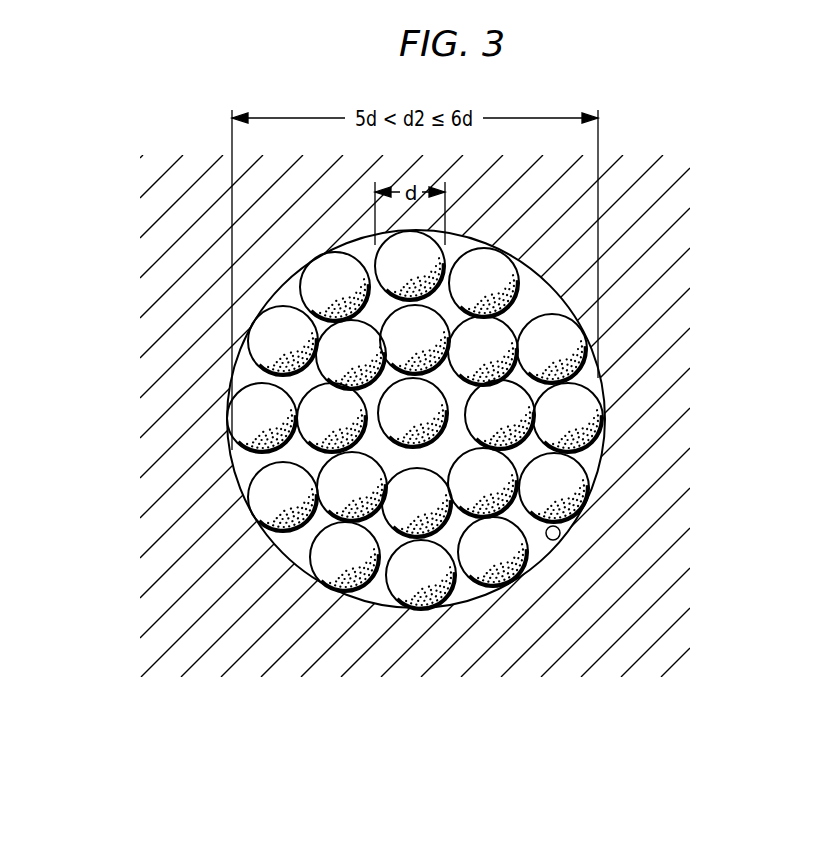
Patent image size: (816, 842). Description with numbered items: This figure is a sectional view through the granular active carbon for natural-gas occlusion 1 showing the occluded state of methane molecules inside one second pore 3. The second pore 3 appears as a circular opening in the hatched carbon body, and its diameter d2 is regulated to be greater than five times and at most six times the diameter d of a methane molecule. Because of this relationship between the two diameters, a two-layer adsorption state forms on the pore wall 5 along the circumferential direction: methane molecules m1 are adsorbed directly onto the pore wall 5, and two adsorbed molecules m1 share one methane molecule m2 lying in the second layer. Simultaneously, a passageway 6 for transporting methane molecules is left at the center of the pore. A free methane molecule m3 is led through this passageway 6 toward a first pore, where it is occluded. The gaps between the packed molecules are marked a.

The granular active carbon for natural-gas occlusion 1 is at (670, 317).
The second pore 3 is at (245, 463).
The pore wall 5 is at (560, 540).
The passageway 6 is at (455, 433).
The interstitial gap a is at (250, 508).
The methane molecule m1 is at (268, 535).
The methane molecule m2 is at (315, 562).
The free methane molecule m3 is at (403, 404).